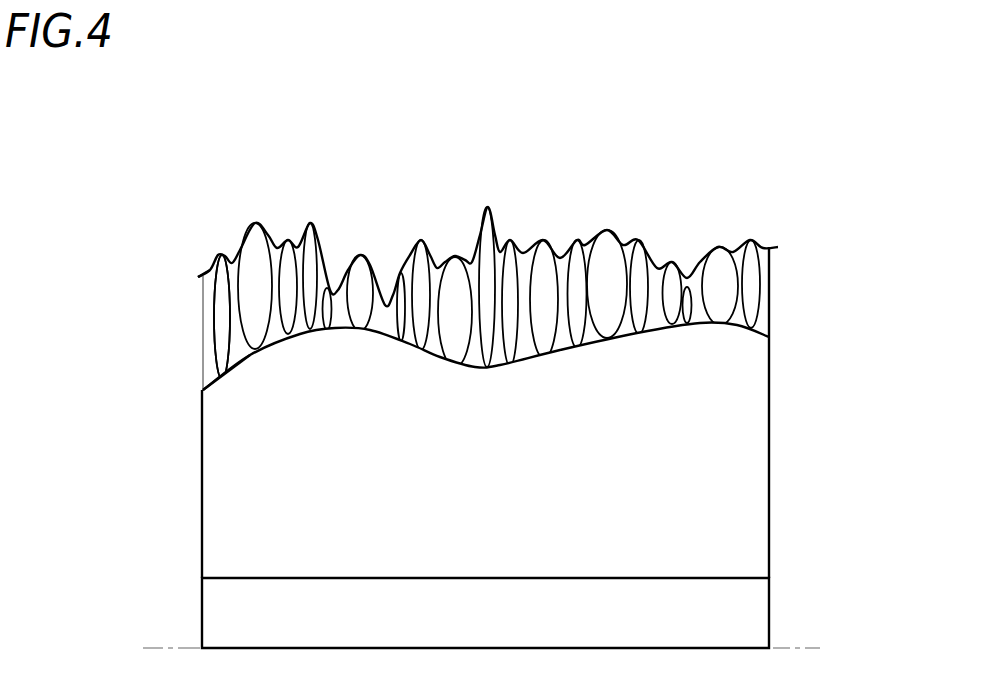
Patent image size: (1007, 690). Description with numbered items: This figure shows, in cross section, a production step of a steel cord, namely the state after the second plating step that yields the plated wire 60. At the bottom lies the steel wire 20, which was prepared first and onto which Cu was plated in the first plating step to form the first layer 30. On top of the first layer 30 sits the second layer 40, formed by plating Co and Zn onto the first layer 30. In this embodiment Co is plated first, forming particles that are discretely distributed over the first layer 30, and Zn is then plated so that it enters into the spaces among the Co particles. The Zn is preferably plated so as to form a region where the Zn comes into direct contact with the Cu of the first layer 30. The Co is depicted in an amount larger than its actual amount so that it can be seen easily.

The steel wire 20 is at (760, 603).
The first layer 30 is at (760, 403).
The second layer 40 is at (788, 247).
The plated wire 60 is at (810, 238).
The zinc Zn is at (210, 292).
The cobalt Co is at (210, 333).
The copper Cu is at (212, 407).